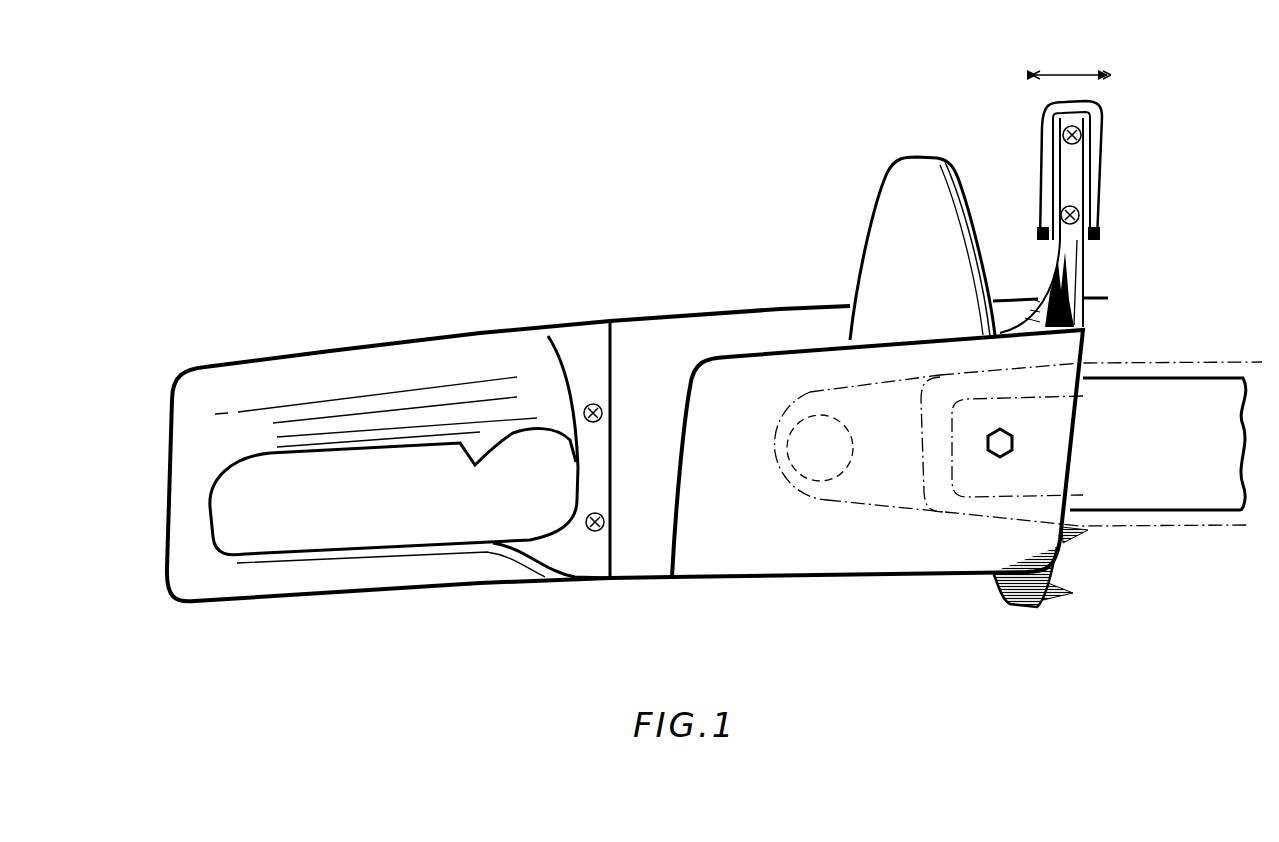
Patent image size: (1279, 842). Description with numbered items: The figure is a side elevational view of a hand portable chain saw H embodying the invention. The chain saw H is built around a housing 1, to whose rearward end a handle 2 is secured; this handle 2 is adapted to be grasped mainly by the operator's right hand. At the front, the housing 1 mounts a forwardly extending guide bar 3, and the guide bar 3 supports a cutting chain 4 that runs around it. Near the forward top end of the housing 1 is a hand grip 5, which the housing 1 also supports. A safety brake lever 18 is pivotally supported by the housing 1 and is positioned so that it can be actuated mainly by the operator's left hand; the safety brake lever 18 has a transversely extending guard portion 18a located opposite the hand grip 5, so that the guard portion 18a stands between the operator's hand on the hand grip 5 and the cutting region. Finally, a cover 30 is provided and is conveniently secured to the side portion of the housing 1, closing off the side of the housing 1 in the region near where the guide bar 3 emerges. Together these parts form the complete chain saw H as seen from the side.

The chain saw H is at (658, 303).
The housing 1 is at (762, 318).
The handle 2 is at (400, 353).
The guide bar 3 is at (1140, 495).
The cutting chain 4 is at (1147, 360).
The hand grip 5 is at (893, 200).
The safety brake lever 18 is at (1097, 267).
The guard portion 18a is at (1075, 167).
The cover 30 is at (803, 560).